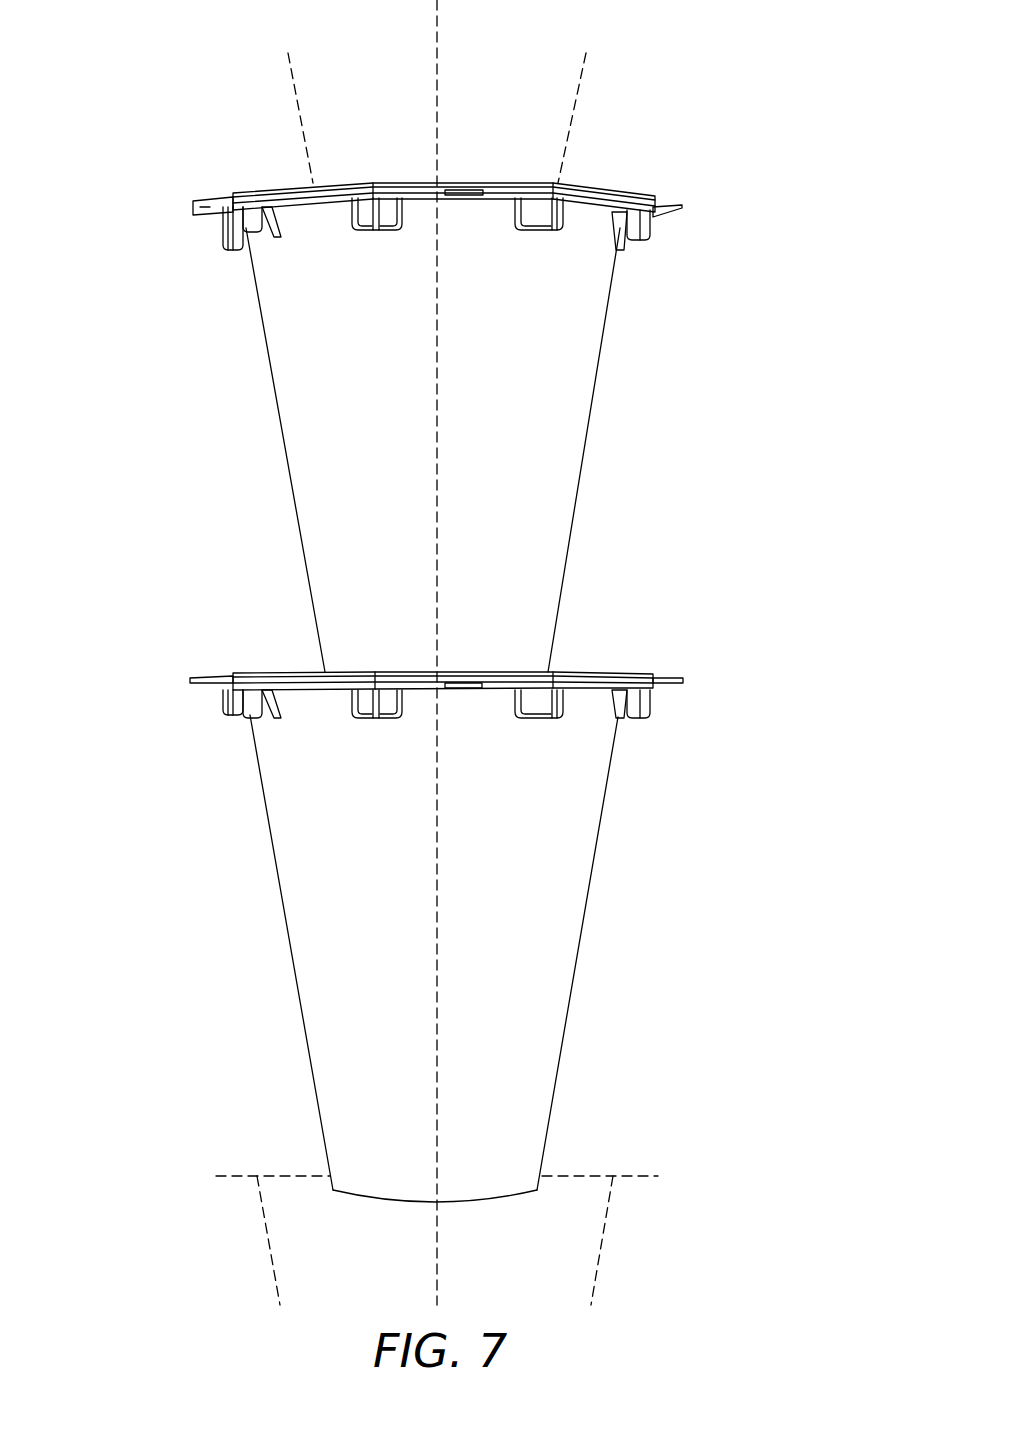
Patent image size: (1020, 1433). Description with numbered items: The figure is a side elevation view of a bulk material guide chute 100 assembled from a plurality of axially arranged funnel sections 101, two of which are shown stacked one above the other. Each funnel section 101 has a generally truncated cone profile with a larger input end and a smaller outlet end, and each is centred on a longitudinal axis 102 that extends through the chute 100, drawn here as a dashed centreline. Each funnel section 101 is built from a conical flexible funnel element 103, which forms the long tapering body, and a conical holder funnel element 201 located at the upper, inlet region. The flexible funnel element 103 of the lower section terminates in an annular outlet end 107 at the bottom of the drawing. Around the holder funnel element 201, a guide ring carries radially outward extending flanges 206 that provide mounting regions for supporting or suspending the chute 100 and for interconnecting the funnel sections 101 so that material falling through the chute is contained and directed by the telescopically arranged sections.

The bulk material guide chute 100 is at (140, 106).
The funnel section 101 is at (737, 1190).
The longitudinal axis 102 is at (438, 18).
The funnel element 103 is at (588, 427).
The annular outlet end 107 is at (503, 1213).
The holder funnel element 201 is at (230, 226).
The flange 206 is at (675, 207).